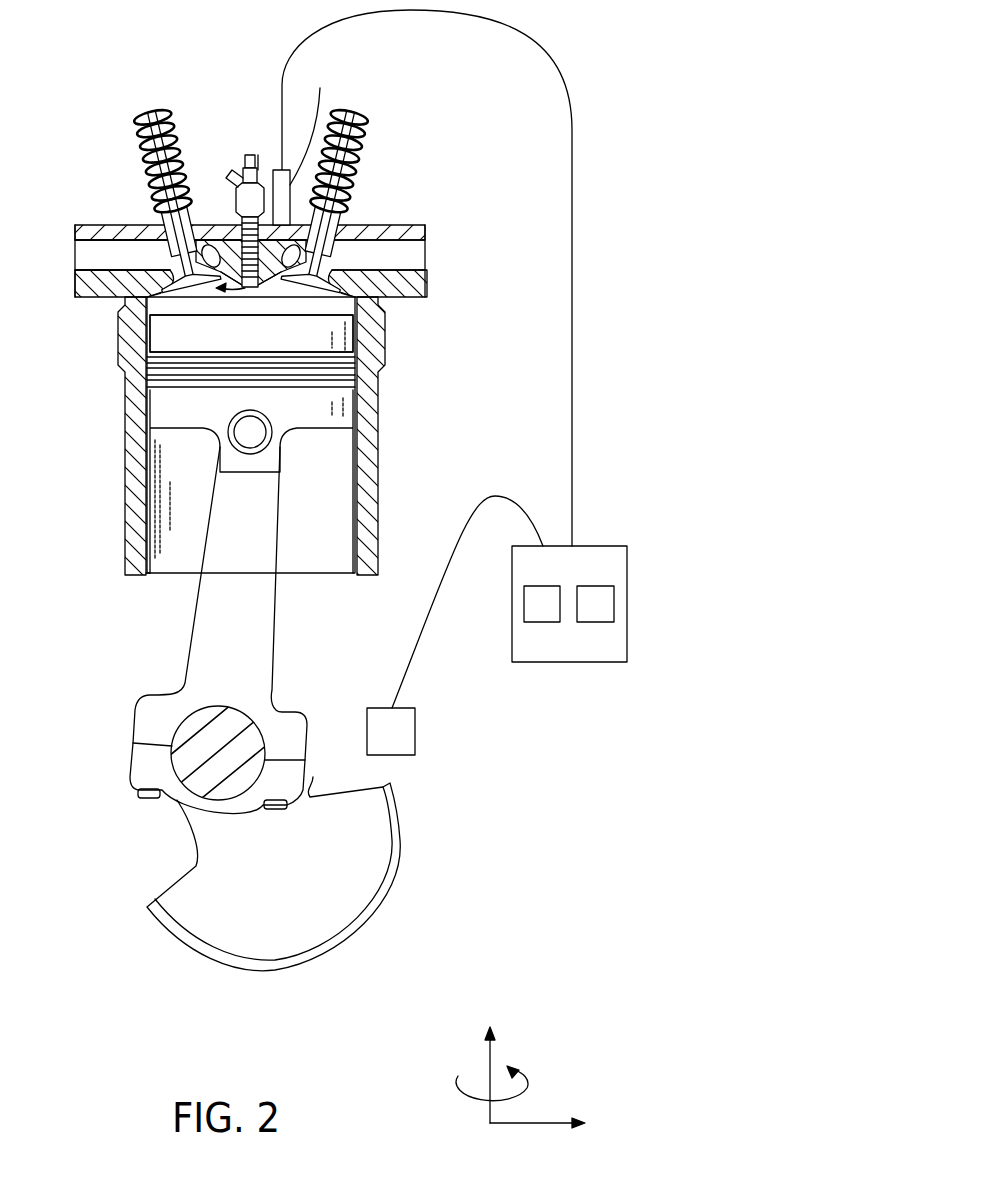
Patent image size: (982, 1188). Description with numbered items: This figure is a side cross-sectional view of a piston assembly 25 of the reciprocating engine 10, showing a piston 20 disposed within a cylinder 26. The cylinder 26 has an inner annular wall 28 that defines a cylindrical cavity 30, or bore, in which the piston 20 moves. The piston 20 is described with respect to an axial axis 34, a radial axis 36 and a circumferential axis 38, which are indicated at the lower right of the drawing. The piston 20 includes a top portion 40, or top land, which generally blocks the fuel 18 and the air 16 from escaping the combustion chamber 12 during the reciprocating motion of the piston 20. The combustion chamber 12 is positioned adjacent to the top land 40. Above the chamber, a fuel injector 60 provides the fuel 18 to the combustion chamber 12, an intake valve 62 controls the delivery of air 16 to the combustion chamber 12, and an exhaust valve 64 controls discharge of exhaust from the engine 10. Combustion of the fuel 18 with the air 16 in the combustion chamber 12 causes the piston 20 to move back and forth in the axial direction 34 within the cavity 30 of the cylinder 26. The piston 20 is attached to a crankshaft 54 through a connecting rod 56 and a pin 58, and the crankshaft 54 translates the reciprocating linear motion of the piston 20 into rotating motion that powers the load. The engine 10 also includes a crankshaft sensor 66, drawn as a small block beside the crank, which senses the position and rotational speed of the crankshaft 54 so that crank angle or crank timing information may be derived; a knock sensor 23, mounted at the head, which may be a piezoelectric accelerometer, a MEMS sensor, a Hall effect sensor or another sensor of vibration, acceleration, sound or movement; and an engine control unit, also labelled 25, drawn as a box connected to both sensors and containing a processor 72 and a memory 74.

The reciprocating engine 10 is at (470, 125).
The combustion chamber 12 is at (300, 283).
The air 16 is at (178, 263).
The fuel 18 is at (252, 153).
The piston 20 is at (327, 420).
The knock sensor 23 is at (303, 142).
The piston assembly 25 is at (600, 546).
The cylinder 26 is at (125, 465).
The inner annular wall 28 is at (150, 500).
The cylindrical cavity 30 is at (194, 563).
The axial axis 34 is at (490, 1058).
The radial axis 36 is at (535, 1123).
The circumferential axis 38 is at (515, 1090).
The top portion 40 is at (305, 343).
The crankshaft 54 is at (190, 897).
The connecting rod 56 is at (257, 676).
The pin 58 is at (254, 436).
The fuel injector 60 is at (257, 170).
The intake valve 62 is at (152, 112).
The exhaust valve 64 is at (352, 113).
The crankshaft sensor 66 is at (417, 735).
The processor 72 is at (540, 622).
The memory 74 is at (598, 622).